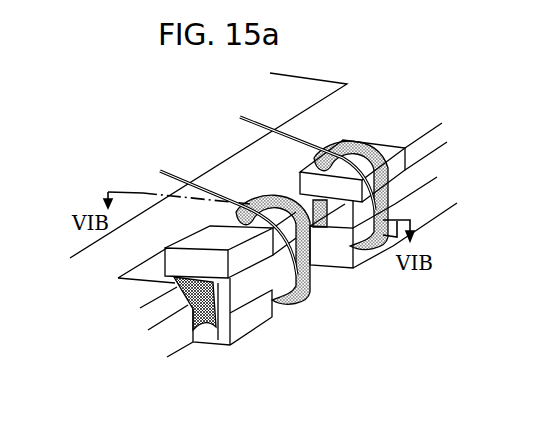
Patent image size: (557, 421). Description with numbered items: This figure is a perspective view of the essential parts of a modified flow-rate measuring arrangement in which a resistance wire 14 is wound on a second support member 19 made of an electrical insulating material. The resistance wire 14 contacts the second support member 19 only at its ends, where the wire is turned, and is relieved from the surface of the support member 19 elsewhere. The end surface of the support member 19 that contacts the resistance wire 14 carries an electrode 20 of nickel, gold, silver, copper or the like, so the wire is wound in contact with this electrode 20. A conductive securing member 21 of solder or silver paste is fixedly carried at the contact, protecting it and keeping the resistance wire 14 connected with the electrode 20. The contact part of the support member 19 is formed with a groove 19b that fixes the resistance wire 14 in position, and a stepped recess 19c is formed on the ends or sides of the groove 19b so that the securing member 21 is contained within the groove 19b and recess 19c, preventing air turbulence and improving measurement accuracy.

The resistance wire 14 is at (260, 120).
The second support member 19 is at (437, 177).
The groove 19b is at (228, 318).
The stepped recess 19c is at (190, 262).
The electrode 20 is at (163, 272).
The conductive securing member 21 is at (305, 286).